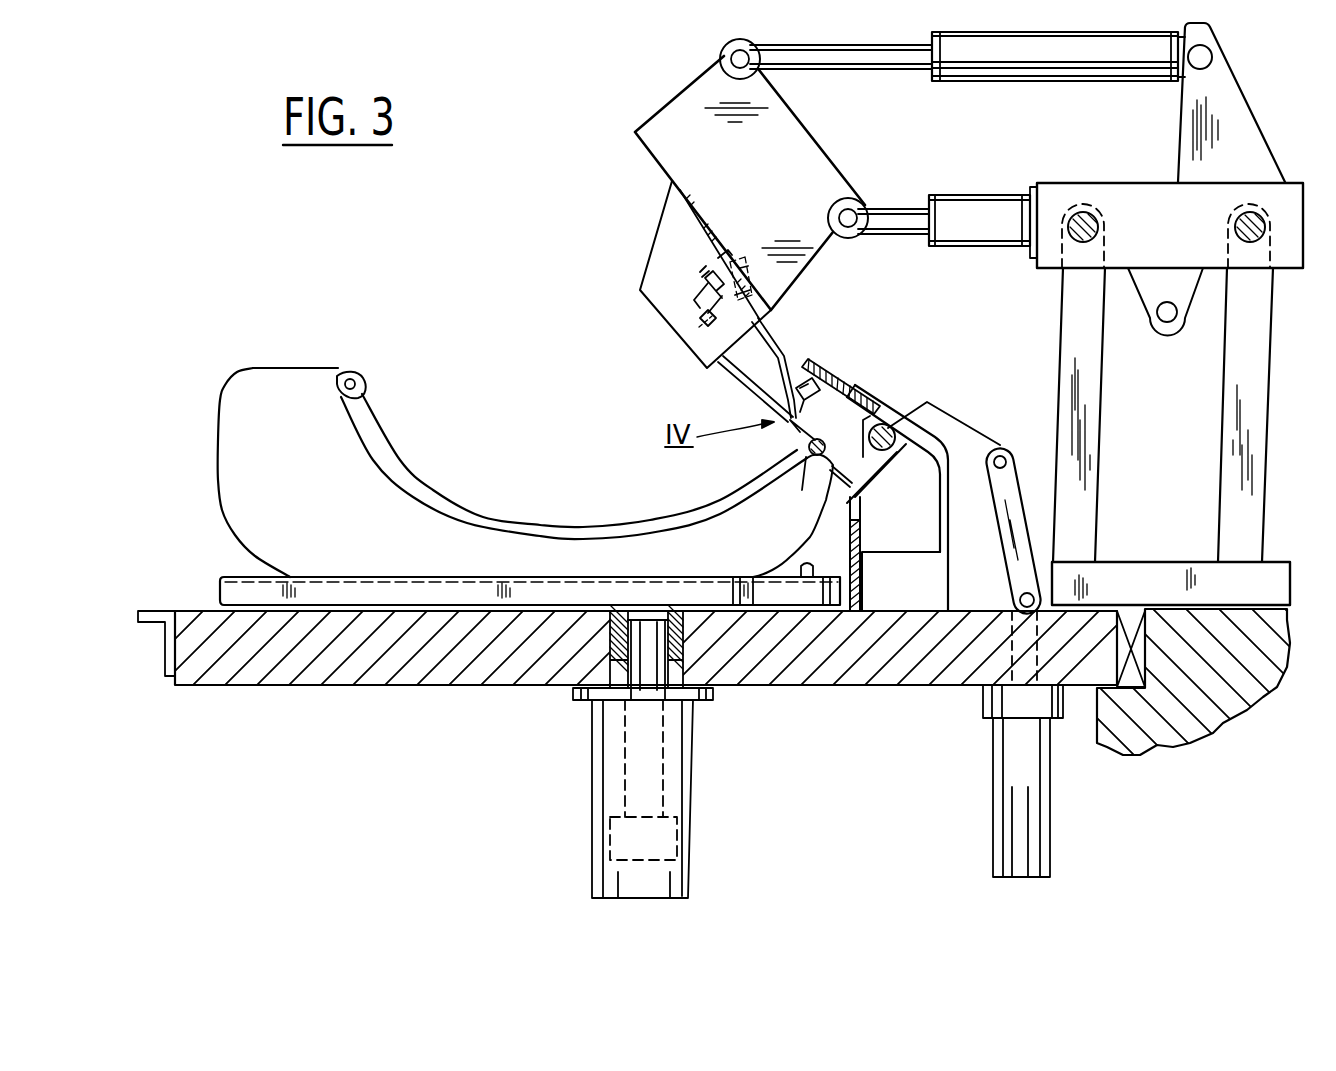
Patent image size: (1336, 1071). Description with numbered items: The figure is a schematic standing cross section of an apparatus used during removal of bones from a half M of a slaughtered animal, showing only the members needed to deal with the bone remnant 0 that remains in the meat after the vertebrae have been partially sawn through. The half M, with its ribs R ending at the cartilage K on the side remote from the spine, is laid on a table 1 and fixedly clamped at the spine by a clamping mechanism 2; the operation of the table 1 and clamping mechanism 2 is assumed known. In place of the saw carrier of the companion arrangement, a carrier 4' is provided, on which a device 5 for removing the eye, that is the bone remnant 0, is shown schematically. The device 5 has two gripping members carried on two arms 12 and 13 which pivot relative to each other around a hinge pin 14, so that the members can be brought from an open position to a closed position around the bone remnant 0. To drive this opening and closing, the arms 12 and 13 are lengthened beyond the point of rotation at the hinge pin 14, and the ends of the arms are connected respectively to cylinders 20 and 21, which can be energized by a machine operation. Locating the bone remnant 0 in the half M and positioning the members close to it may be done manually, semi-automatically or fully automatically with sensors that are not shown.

The table 1 is at (222, 587).
The clamping mechanism 2 is at (855, 348).
The carrier 4' is at (1026, 314).
The device for removing the eye 5 is at (751, 216).
The arm 12 is at (780, 360).
The arm 13 is at (754, 389).
The hinge pin 14 is at (793, 427).
The cylinder 20 is at (672, 297).
The cylinder 21 is at (687, 333).
The bone remnant 0 is at (803, 480).
The half M is at (230, 405).
The cartilage K is at (365, 392).
The ribs R is at (590, 517).